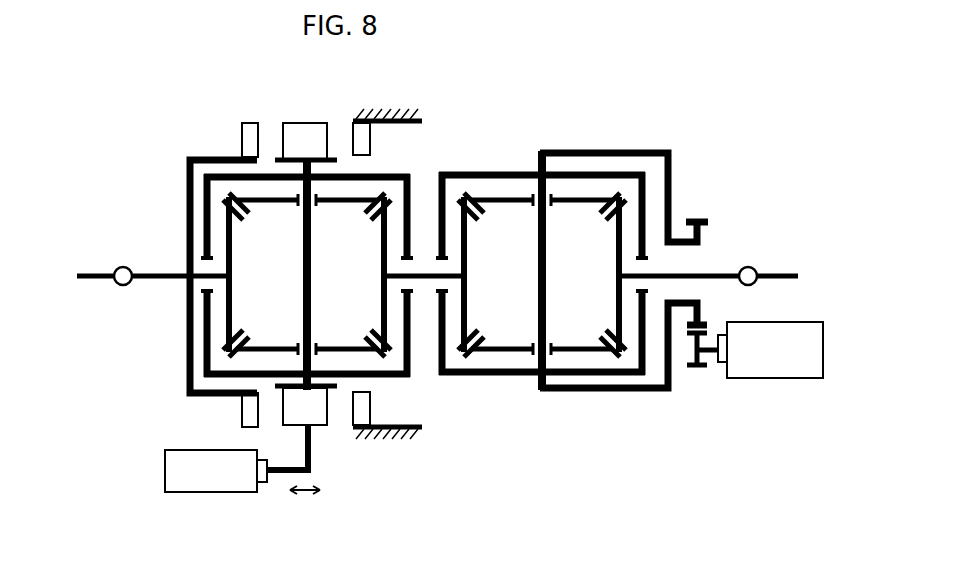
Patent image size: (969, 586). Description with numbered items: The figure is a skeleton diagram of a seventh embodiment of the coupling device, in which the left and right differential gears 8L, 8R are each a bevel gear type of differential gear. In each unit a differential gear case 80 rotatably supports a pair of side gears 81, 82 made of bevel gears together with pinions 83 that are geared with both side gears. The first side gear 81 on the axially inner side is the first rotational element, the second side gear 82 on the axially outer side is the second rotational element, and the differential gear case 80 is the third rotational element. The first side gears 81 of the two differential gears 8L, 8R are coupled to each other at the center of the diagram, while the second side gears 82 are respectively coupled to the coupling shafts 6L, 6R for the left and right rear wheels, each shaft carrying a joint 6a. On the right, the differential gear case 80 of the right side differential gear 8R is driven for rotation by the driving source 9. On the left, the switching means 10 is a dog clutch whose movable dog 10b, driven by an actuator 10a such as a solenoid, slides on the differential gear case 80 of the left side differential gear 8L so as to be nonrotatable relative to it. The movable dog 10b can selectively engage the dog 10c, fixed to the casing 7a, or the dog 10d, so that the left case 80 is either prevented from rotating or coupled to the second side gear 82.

The coupling shaft 6L is at (90, 273).
The coupling shaft 6R is at (790, 272).
The axle coupling 6a is at (125, 287).
The casing 7a is at (405, 437).
The left side differential gear 8L is at (207, 145).
The right side differential gear 8R is at (546, 130).
The differential gear case 80 is at (348, 173).
The first side gear 81 is at (381, 247).
The second side gear 82 is at (232, 298).
The pinion 83 is at (272, 203).
The driving source 9 is at (770, 378).
The switching means 10 is at (278, 502).
The actuator 10a is at (213, 487).
The movable dog 10b is at (317, 418).
The dog 10c is at (247, 417).
The dog 10d is at (362, 415).